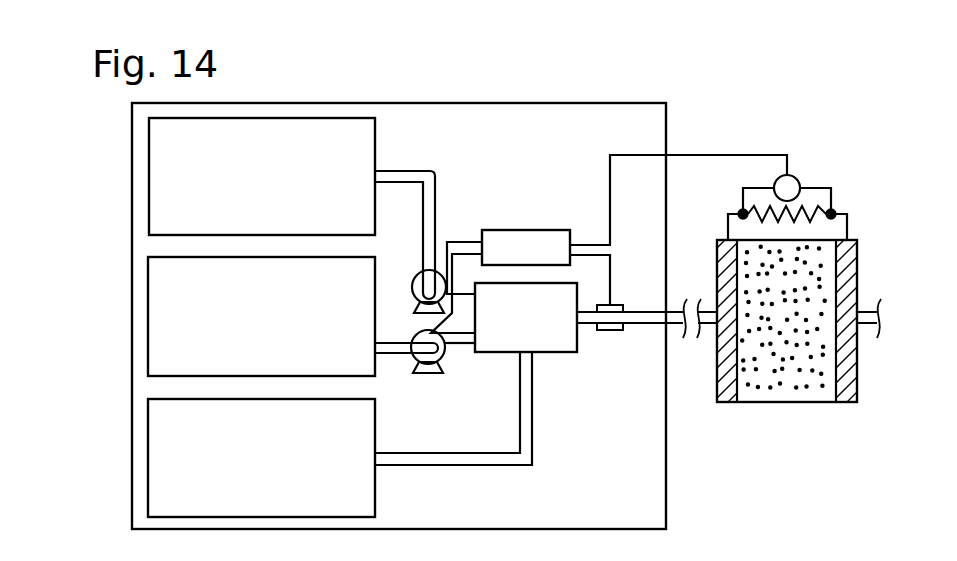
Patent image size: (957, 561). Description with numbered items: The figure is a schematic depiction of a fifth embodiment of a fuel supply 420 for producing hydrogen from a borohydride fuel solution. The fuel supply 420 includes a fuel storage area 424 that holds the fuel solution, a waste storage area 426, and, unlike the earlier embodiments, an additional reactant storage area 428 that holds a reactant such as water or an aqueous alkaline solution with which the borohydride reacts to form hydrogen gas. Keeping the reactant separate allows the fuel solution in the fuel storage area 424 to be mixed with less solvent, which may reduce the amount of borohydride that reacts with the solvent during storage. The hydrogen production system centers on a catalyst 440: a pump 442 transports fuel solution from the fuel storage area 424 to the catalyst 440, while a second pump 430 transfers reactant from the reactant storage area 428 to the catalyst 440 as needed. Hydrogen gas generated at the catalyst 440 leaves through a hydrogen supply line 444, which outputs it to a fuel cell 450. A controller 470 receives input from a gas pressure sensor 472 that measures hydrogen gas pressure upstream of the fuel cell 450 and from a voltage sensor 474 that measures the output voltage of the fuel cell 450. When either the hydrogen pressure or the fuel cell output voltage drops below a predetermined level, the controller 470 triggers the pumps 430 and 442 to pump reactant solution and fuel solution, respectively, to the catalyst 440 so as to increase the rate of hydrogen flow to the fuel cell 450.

The fuel supply 420 is at (105, 258).
The fuel storage area 424 is at (262, 176).
The reactant storage area 428 is at (261, 316).
The waste storage area 426 is at (340, 434).
The catalyst 440 is at (511, 317).
The controller 470 is at (609, 244).
The pump 442 is at (413, 276).
The second pump 430 is at (431, 374).
The gas pressure sensor 472 is at (610, 334).
The hydrogen supply line 444 is at (648, 328).
The fuel cell 450 is at (868, 188).
The voltage sensor 474 is at (795, 178).